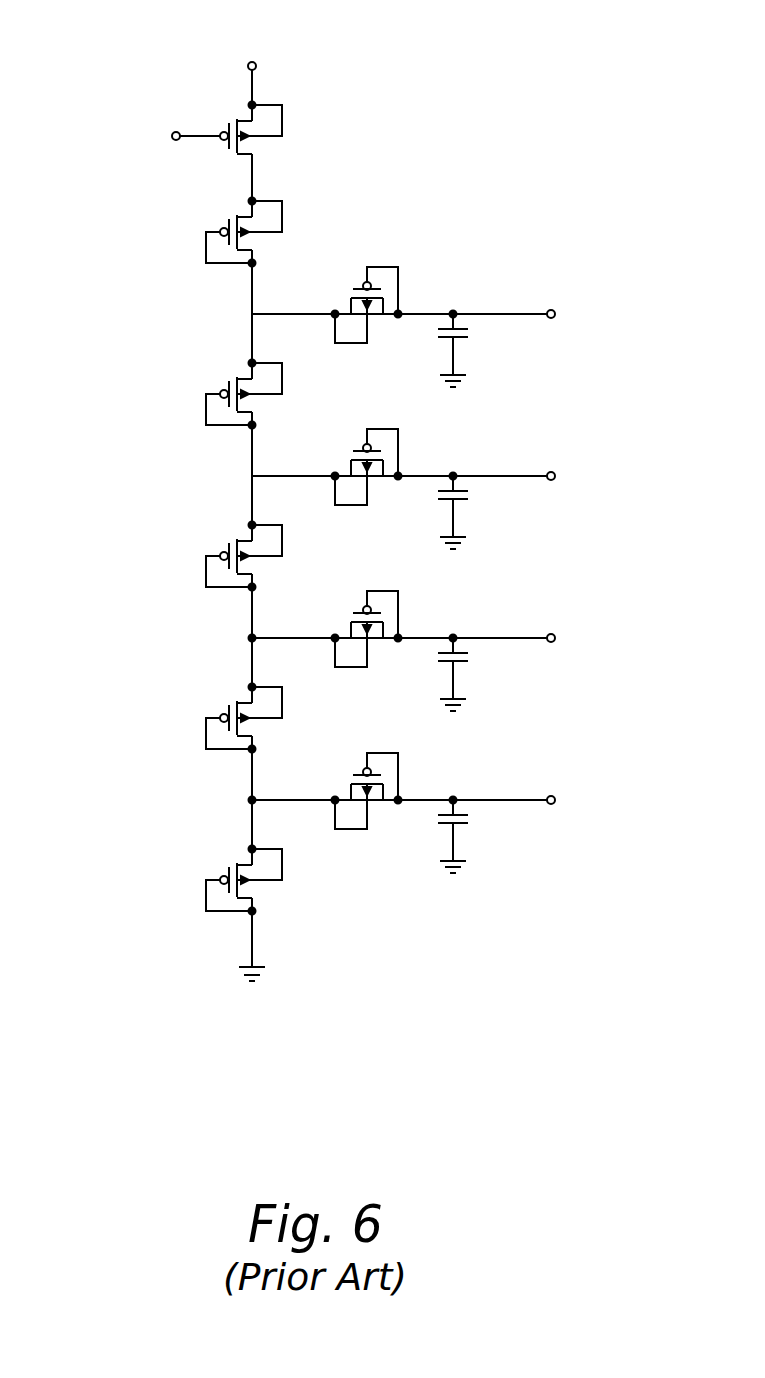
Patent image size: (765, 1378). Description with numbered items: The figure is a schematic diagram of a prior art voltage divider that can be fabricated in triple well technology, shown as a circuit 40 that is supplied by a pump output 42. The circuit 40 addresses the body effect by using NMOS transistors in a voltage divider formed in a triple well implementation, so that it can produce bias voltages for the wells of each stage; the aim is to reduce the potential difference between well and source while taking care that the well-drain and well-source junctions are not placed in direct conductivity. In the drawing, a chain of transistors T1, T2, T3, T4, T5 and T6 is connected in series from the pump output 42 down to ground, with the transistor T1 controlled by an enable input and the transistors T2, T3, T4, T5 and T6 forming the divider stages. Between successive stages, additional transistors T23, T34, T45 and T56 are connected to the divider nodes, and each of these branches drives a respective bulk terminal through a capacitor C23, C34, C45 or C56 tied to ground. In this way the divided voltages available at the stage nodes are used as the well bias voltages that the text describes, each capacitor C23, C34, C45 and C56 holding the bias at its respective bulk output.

The circuit 40 is at (343, 501).
The pump output 42 is at (257, 67).
The enable transistor T1 is at (266, 128).
The diode-connected transistor T2 is at (259, 232).
The diode-connected transistor T3 is at (259, 394).
The diode-connected transistor T4 is at (259, 556).
The diode-connected transistor T5 is at (259, 718).
The diode-connected transistor T6 is at (259, 880).
The bulk pass transistor T23 is at (367, 323).
The bulk pass transistor T34 is at (367, 485).
The bulk pass transistor T45 is at (367, 647).
The bulk pass transistor T56 is at (367, 809).
The bulk capacitor C23 is at (478, 349).
The bulk capacitor C34 is at (478, 511).
The bulk capacitor C45 is at (478, 673).
The bulk capacitor C56 is at (478, 835).